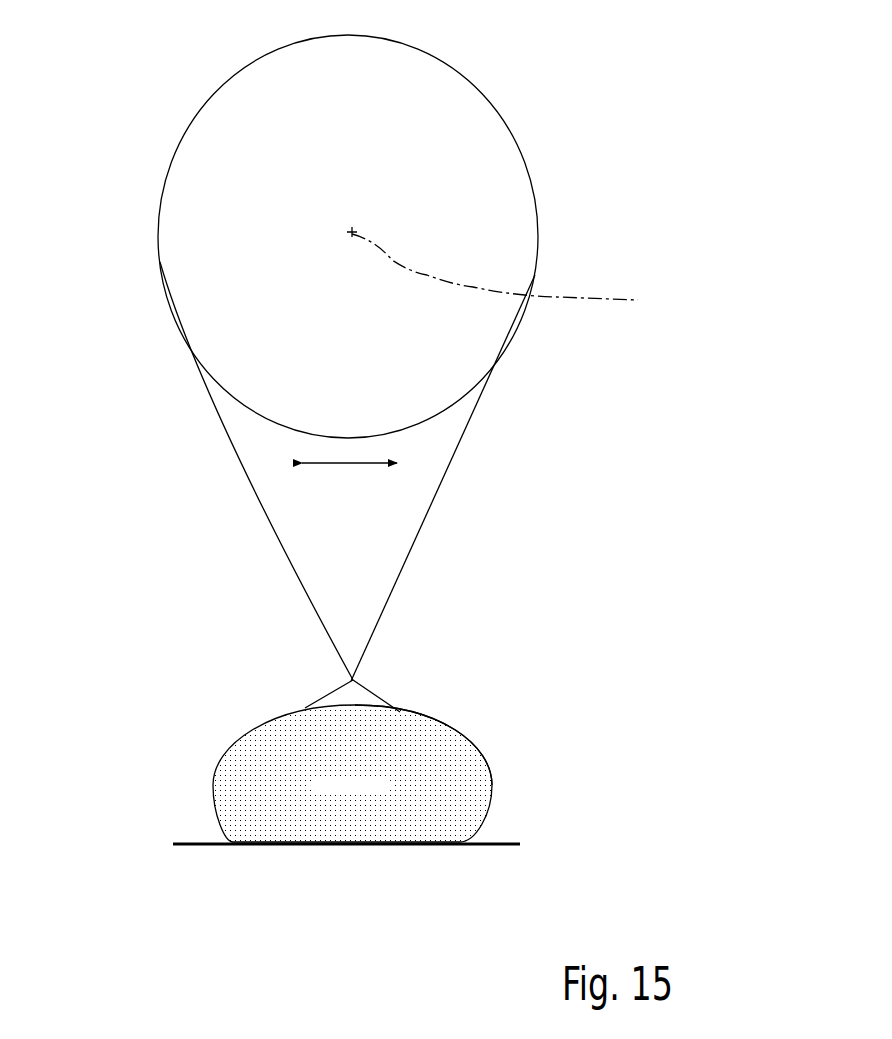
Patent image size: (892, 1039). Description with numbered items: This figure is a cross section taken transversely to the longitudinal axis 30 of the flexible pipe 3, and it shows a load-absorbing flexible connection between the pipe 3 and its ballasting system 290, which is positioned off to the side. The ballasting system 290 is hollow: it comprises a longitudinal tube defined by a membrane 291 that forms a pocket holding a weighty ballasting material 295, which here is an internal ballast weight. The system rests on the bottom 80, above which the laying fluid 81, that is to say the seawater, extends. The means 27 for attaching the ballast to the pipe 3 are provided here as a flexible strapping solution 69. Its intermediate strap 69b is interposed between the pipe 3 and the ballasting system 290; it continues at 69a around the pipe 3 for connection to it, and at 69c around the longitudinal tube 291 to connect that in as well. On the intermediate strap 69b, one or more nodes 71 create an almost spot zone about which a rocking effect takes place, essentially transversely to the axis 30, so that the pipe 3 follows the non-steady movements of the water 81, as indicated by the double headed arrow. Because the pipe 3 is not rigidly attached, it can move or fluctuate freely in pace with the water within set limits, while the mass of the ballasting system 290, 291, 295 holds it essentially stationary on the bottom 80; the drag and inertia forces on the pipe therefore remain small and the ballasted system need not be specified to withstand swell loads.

The pipe 3 is at (168, 270).
The longitudinal axis 30 is at (518, 269).
The flexible strapping solution 69 is at (270, 510).
The strap portion around the pipe 69a is at (492, 98).
The intermediate flexible strap 69b is at (423, 532).
The strap portion around the longitudinal tube 69c is at (310, 705).
The node 71 is at (348, 682).
The means for attaching a ballast 27 is at (222, 432).
The laying fluid 81 is at (620, 492).
The ballasting system 290 is at (495, 785).
The membrane 291 is at (460, 747).
The ballasting material 295 is at (393, 787).
The bottom 80 is at (180, 838).